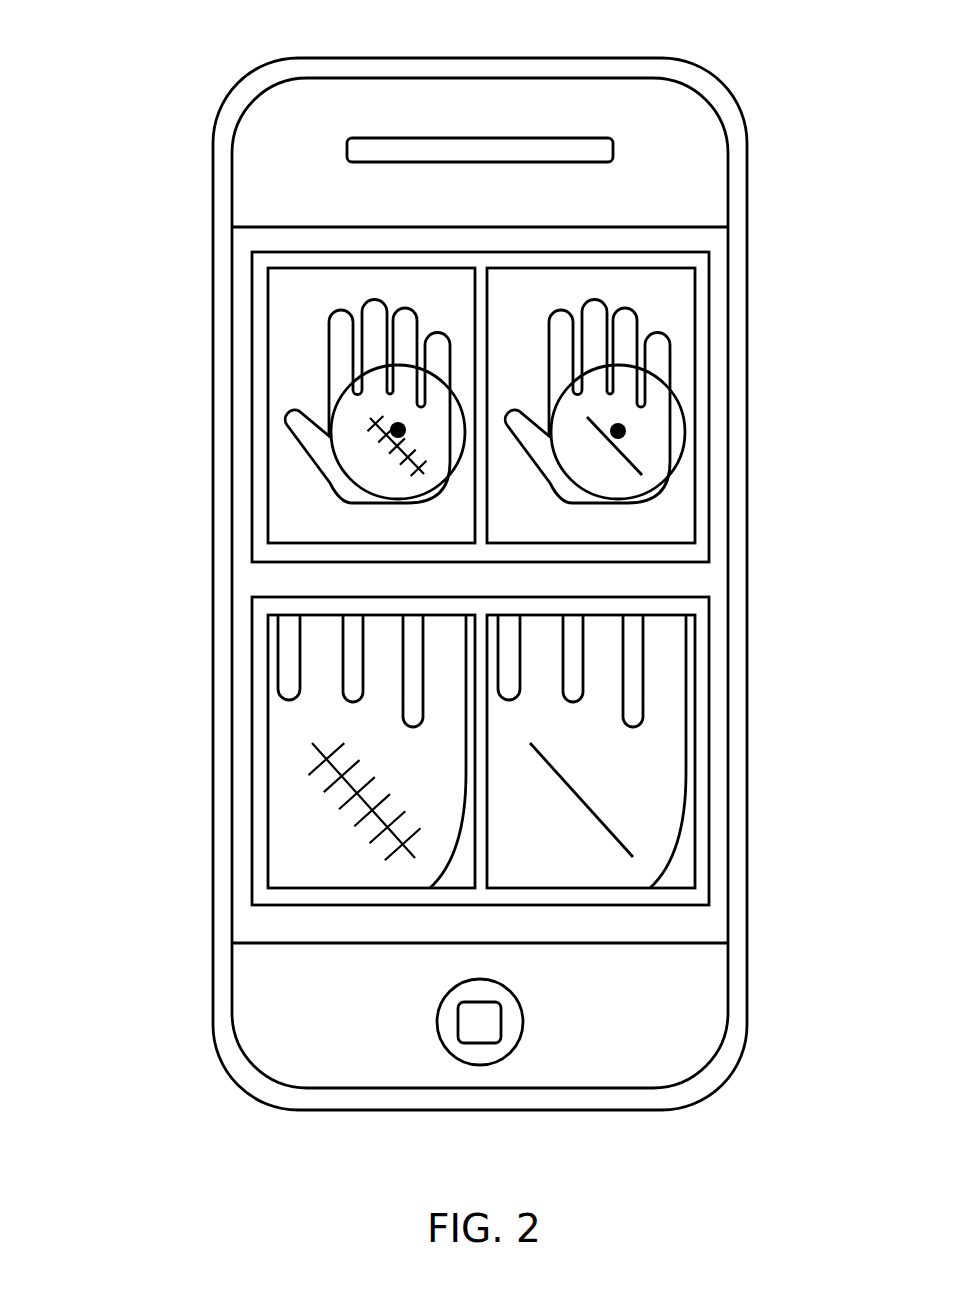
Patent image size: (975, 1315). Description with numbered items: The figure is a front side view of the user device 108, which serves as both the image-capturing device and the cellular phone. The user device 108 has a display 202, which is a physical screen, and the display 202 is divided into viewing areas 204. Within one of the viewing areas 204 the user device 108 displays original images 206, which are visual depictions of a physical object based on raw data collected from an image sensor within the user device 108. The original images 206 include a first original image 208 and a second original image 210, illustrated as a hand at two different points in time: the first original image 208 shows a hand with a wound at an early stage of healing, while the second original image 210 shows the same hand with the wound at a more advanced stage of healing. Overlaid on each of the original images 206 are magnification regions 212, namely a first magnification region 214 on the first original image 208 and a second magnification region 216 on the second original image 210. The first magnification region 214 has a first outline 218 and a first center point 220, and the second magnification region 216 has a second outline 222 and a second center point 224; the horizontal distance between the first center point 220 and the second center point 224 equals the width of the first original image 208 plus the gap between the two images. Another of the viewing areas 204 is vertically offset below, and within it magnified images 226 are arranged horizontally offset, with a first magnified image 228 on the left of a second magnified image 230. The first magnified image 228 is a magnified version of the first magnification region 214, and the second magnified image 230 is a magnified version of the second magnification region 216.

The user device 108 is at (130, 26).
The display 202 is at (275, 233).
The viewing areas 204 is at (260, 250).
The original images 206 is at (259, 288).
The first original image 208 is at (270, 333).
The second original image 210 is at (487, 383).
The magnification regions 212 is at (312, 397).
The first magnification region 214 is at (352, 438).
The second magnification region 216 is at (627, 482).
The first outline 218 is at (367, 490).
The first center point 220 is at (390, 444).
The second outline 222 is at (678, 462).
The second center point 224 is at (621, 428).
The magnified images 226 is at (256, 647).
The first magnified image 228 is at (308, 693).
The second magnified image 230 is at (518, 727).